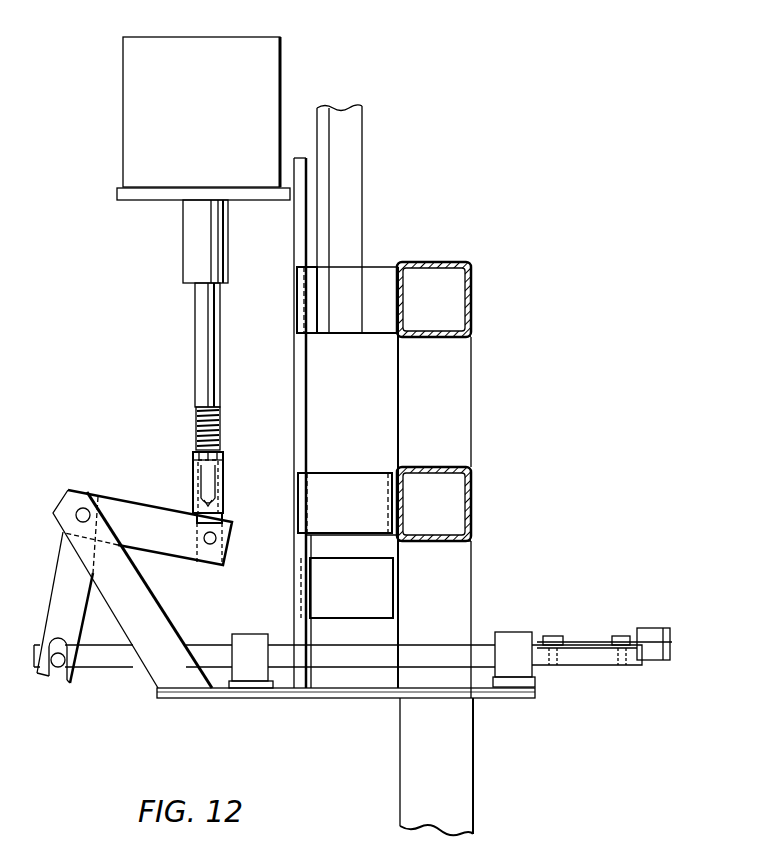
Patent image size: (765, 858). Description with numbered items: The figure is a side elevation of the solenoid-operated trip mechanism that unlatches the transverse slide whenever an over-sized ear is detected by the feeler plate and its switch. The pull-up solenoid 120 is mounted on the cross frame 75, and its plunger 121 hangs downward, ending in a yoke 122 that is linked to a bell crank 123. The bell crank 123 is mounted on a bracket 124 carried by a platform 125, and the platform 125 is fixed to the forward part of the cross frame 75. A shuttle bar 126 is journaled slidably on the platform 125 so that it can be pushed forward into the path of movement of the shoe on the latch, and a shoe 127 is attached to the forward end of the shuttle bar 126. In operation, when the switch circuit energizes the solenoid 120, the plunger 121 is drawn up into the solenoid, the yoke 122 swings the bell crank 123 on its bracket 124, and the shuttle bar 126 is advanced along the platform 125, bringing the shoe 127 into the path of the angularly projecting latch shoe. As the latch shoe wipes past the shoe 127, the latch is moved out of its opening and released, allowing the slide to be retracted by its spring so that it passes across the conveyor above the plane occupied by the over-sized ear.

The frame 75 is at (457, 407).
The pull-up solenoid 120 is at (268, 53).
The plunger 121 is at (220, 312).
The yoke 122 is at (223, 478).
The bell crank 123 is at (147, 517).
The bracket 124 is at (145, 607).
The platform 125 is at (352, 698).
The shuttle bar 126 is at (473, 652).
The shoe 127 is at (672, 642).